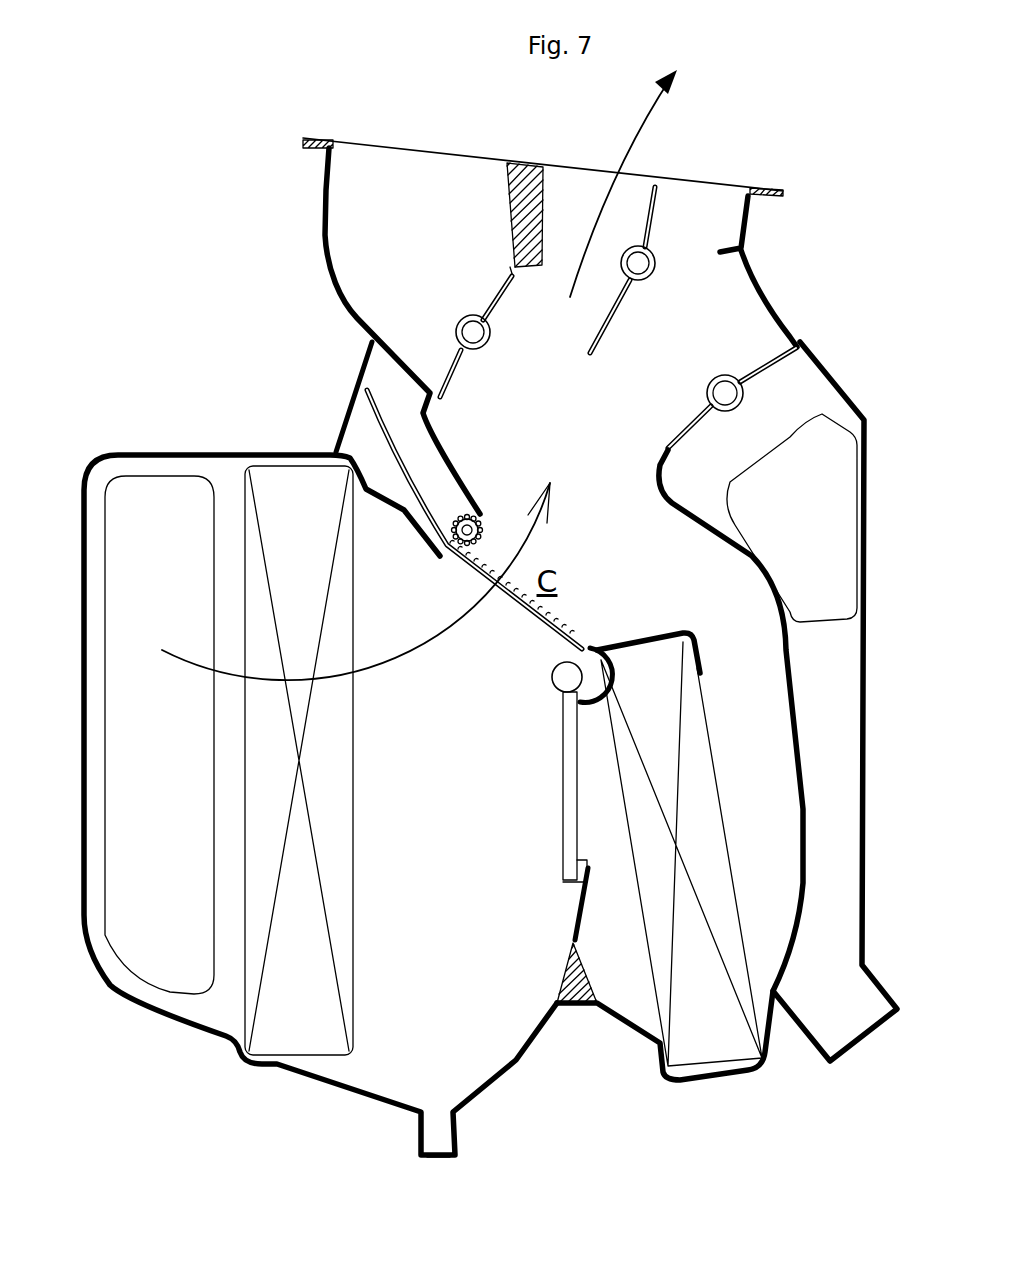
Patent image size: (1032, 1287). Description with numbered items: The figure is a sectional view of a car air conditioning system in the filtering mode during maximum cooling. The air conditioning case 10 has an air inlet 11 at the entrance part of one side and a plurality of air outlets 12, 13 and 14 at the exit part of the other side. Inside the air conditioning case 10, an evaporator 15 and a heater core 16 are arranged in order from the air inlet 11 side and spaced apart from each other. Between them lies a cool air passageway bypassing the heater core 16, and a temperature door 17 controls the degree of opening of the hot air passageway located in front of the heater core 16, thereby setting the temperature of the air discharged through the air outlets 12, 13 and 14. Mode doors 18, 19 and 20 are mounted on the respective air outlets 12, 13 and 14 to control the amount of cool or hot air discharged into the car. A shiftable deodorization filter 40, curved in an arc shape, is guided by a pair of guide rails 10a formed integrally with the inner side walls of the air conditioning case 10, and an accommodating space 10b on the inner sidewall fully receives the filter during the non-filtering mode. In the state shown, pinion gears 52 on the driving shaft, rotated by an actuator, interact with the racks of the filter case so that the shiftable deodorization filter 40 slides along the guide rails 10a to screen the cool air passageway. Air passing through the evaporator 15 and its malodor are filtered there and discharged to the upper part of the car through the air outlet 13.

The air conditioning case 10 is at (133, 447).
The guide rails 10a is at (348, 402).
The accommodating space 10b is at (362, 342).
The air inlet 11 is at (160, 942).
The air outlet 12 is at (398, 163).
The air outlet 13 is at (568, 183).
The air outlet 14 is at (873, 1035).
The evaporator 15 is at (300, 1020).
The heater core 16 is at (708, 1040).
The temperature door 17 is at (562, 840).
The mode door 18 is at (505, 290).
The mode door 19 is at (657, 212).
The mode door 20 is at (782, 337).
The shiftable deodorization filter 40 is at (464, 587).
The pinion gears 52 is at (460, 518).